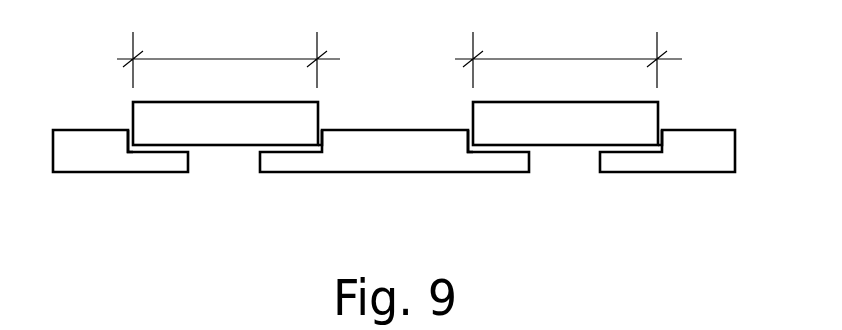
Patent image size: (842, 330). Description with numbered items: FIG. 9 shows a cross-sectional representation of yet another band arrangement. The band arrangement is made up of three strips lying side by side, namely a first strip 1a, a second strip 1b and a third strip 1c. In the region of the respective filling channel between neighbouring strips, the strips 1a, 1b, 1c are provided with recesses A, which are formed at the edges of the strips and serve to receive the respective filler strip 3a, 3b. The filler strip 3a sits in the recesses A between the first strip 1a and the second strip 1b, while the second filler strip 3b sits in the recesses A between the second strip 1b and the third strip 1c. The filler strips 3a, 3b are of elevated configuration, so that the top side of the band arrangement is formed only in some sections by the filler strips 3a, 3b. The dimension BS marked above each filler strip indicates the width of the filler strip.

The first strip 1a is at (88, 155).
The second strip 1b is at (398, 155).
The third strip 1c is at (708, 155).
The filler strip 3a is at (226, 132).
The second filler strip 3b is at (580, 132).
The recess A is at (128, 125).
The width of the filler strip BS is at (399, 56).